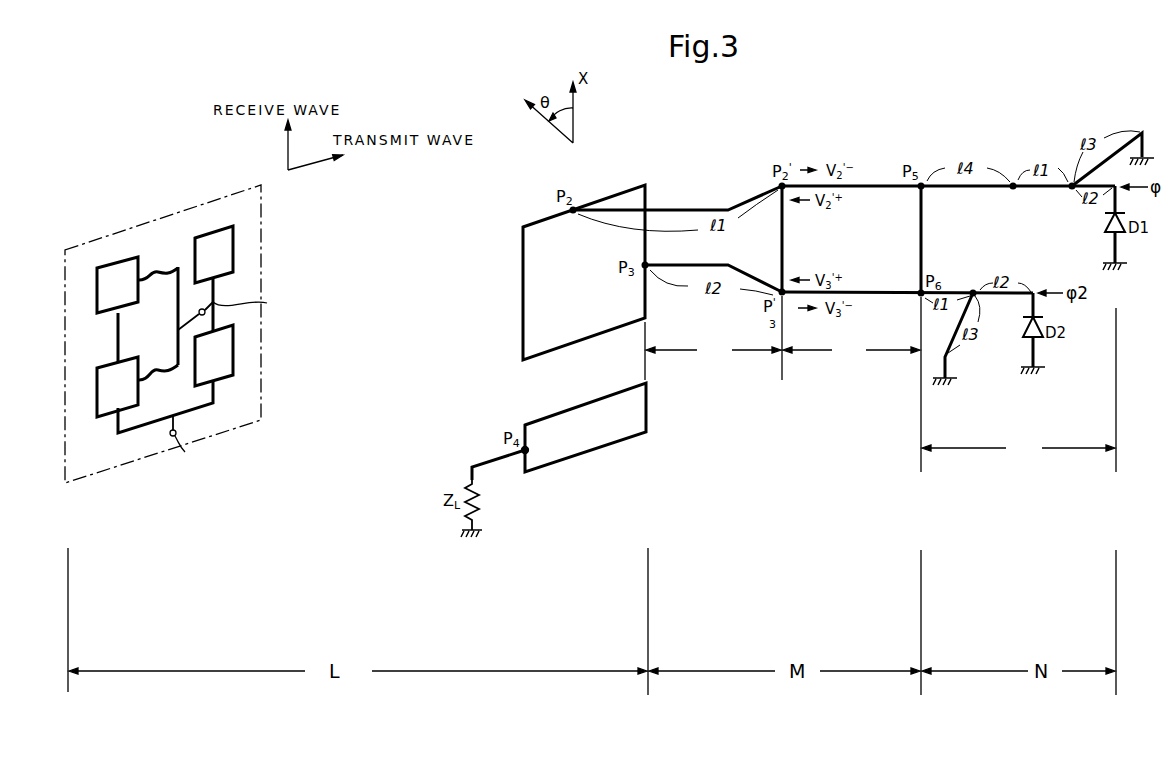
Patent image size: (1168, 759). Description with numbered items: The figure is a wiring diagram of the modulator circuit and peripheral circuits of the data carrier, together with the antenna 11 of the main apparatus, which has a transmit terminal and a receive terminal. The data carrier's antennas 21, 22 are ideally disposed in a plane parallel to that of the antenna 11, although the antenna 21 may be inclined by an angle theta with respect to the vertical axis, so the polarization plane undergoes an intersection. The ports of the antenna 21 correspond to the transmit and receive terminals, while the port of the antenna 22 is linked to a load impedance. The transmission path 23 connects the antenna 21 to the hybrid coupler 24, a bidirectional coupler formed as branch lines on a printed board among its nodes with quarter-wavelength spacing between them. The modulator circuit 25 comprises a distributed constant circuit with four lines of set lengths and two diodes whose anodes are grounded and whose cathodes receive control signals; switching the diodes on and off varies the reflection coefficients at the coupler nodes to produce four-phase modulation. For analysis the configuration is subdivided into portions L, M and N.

The antenna of the main apparatus 11 is at (108, 214).
The antenna 21 is at (513, 289).
The antenna 22 is at (610, 460).
The transmission path 23 is at (713, 338).
The hybrid coupler 24 is at (852, 384).
The modulator circuit 25 is at (1019, 390).